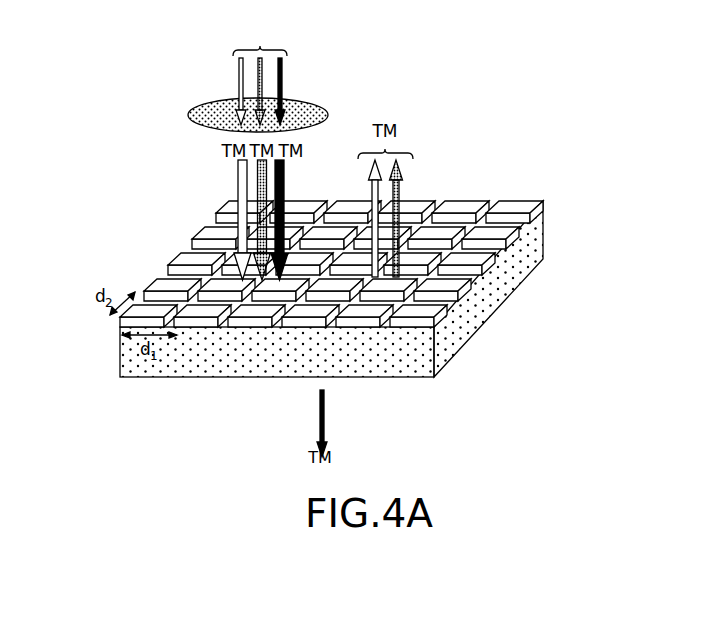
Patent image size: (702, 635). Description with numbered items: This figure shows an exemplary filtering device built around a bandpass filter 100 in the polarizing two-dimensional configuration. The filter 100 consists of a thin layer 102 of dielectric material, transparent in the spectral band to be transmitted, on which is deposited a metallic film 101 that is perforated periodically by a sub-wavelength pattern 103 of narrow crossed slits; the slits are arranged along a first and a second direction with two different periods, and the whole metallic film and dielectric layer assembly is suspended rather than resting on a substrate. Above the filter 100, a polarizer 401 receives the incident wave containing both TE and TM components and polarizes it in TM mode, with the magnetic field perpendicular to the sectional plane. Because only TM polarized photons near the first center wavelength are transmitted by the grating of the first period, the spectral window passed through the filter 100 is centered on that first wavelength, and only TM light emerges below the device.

The bandpass filter 100 is at (301, 237).
The metallic film 101 is at (467, 317).
The thin layer of dielectric material 102 is at (410, 353).
The sub-wavelength pattern 103 is at (145, 308).
The polarizer 401 is at (310, 118).